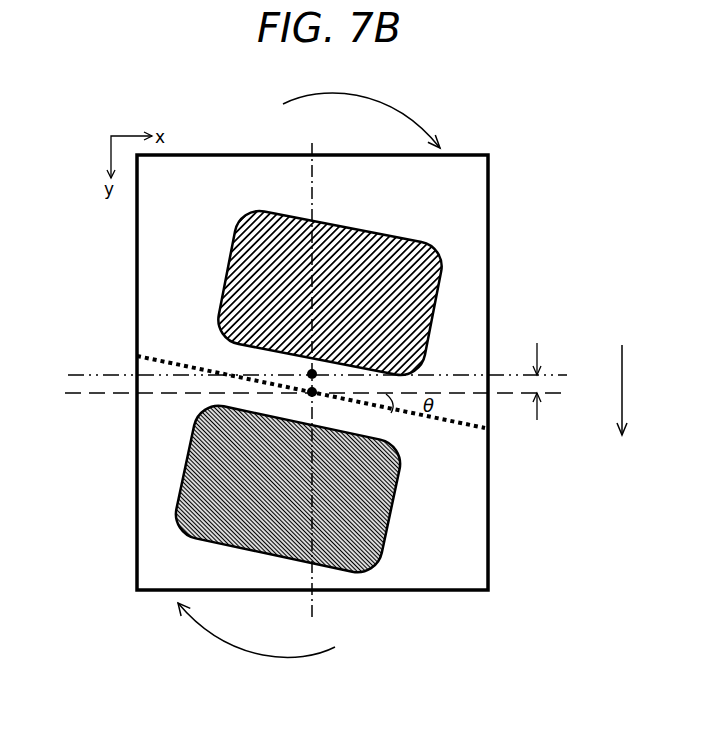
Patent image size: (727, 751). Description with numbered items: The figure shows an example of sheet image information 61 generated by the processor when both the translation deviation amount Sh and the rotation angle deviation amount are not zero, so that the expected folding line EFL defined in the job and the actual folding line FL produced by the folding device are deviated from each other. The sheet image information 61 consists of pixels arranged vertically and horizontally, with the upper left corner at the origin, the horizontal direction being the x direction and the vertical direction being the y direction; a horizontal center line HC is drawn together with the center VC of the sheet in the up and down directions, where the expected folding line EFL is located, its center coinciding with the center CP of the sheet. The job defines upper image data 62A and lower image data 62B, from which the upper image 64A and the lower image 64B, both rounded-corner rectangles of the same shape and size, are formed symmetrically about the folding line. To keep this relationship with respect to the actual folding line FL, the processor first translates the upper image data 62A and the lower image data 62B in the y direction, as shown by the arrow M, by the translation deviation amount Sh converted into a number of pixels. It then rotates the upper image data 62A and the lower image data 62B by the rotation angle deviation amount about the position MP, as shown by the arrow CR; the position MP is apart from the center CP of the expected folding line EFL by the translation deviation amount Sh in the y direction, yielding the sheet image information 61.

The sheet image information 61 is at (490, 238).
The upper image data 62A is at (376, 300).
The upper image 64A is at (437, 297).
The lower image data 62B is at (358, 495).
The lower image 64B is at (387, 540).
The horizontal center line HC is at (313, 370).
The center of the sheet in the up and down directions VC is at (297, 376).
The expected folding line EFL is at (113, 373).
The actual folding line FL is at (458, 424).
The center of the sheet CP is at (312, 374).
The position MP is at (312, 393).
The translation deviation amount Sh is at (549, 383).
The arrow M is at (630, 390).
The arrow CR is at (309, 378).